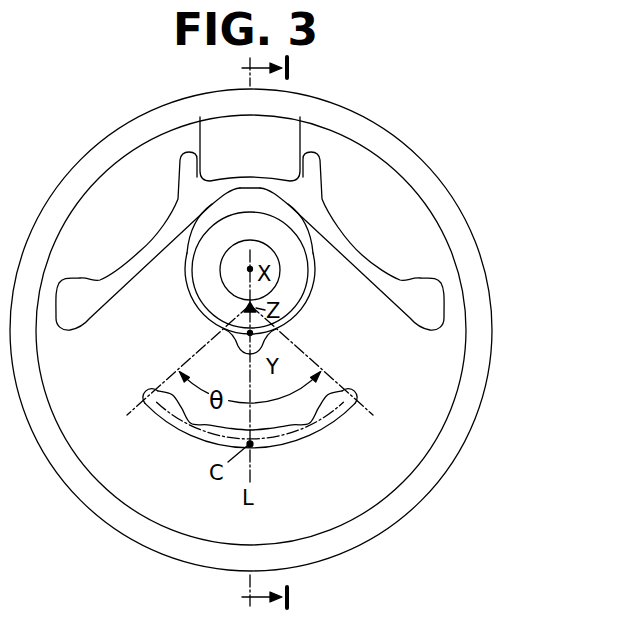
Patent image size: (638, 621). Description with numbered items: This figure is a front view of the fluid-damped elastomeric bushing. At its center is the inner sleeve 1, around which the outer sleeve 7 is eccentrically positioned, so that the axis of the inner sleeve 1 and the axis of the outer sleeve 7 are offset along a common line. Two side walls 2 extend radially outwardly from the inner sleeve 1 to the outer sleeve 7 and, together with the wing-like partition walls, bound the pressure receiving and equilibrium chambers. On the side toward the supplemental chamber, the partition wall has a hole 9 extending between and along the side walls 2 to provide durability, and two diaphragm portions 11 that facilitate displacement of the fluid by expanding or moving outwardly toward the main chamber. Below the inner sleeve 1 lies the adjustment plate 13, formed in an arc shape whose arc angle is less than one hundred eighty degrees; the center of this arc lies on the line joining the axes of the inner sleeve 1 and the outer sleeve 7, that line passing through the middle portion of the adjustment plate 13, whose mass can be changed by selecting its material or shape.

The inner sleeve 1 is at (293, 243).
The side walls 2 is at (442, 380).
The outer sleeve 7 is at (478, 248).
The hole 9 is at (365, 258).
The diaphragm portions 11 is at (140, 249).
The adjustment plate 13 is at (302, 438).